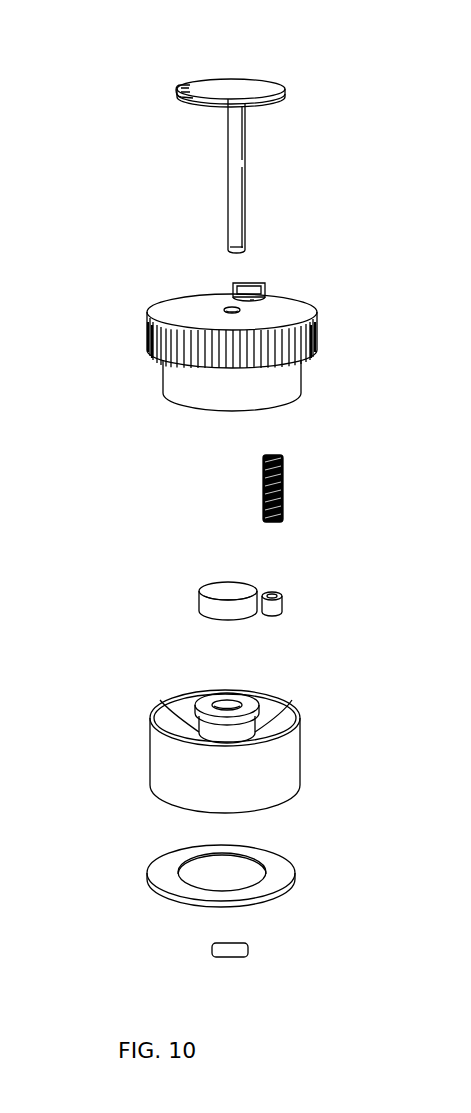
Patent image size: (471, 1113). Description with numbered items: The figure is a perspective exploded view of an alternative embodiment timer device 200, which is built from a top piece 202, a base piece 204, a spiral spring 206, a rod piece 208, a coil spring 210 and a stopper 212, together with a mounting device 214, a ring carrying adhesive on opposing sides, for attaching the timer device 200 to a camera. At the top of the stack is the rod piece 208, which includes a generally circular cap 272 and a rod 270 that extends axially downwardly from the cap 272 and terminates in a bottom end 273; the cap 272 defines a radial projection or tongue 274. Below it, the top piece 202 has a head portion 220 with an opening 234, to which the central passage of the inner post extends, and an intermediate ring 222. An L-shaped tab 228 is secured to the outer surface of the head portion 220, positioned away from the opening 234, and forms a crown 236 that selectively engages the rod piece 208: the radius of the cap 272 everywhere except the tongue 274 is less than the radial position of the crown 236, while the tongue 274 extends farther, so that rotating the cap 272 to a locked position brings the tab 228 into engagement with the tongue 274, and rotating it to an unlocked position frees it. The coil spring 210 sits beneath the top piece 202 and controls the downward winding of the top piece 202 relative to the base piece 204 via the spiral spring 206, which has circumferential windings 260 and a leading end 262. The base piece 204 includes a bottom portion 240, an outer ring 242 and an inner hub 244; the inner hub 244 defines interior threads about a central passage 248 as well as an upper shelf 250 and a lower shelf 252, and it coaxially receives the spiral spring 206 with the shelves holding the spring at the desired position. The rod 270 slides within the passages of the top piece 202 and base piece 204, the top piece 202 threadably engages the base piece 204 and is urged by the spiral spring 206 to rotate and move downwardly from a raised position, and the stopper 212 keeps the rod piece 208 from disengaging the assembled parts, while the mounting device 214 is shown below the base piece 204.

The timer device 200 is at (88, 22).
The rod piece 208 is at (292, 172).
The cap 272 is at (238, 88).
The tongue 274 is at (187, 88).
The rod 270 is at (233, 184).
The bottom end 273 is at (238, 250).
The top piece 202 is at (318, 386).
The head portion 220 is at (287, 310).
The opening 234 is at (230, 306).
The tab 228 is at (252, 283).
The crown 236 is at (258, 298).
The intermediate ring 222 is at (178, 384).
The coil spring 210 is at (305, 500).
The spiral spring 206 is at (300, 603).
The circumferential windings 260 is at (211, 588).
The leading end 262 is at (272, 594).
The base piece 204 is at (305, 771).
The outer ring 242 is at (172, 783).
The bottom portion 240 is at (265, 808).
The upper shelf 250 is at (250, 701).
The central passage 248 is at (225, 704).
The inner hub 244 is at (254, 719).
The lower shelf 252 is at (162, 705).
The mounting device 214 is at (305, 877).
The stopper 212 is at (272, 955).